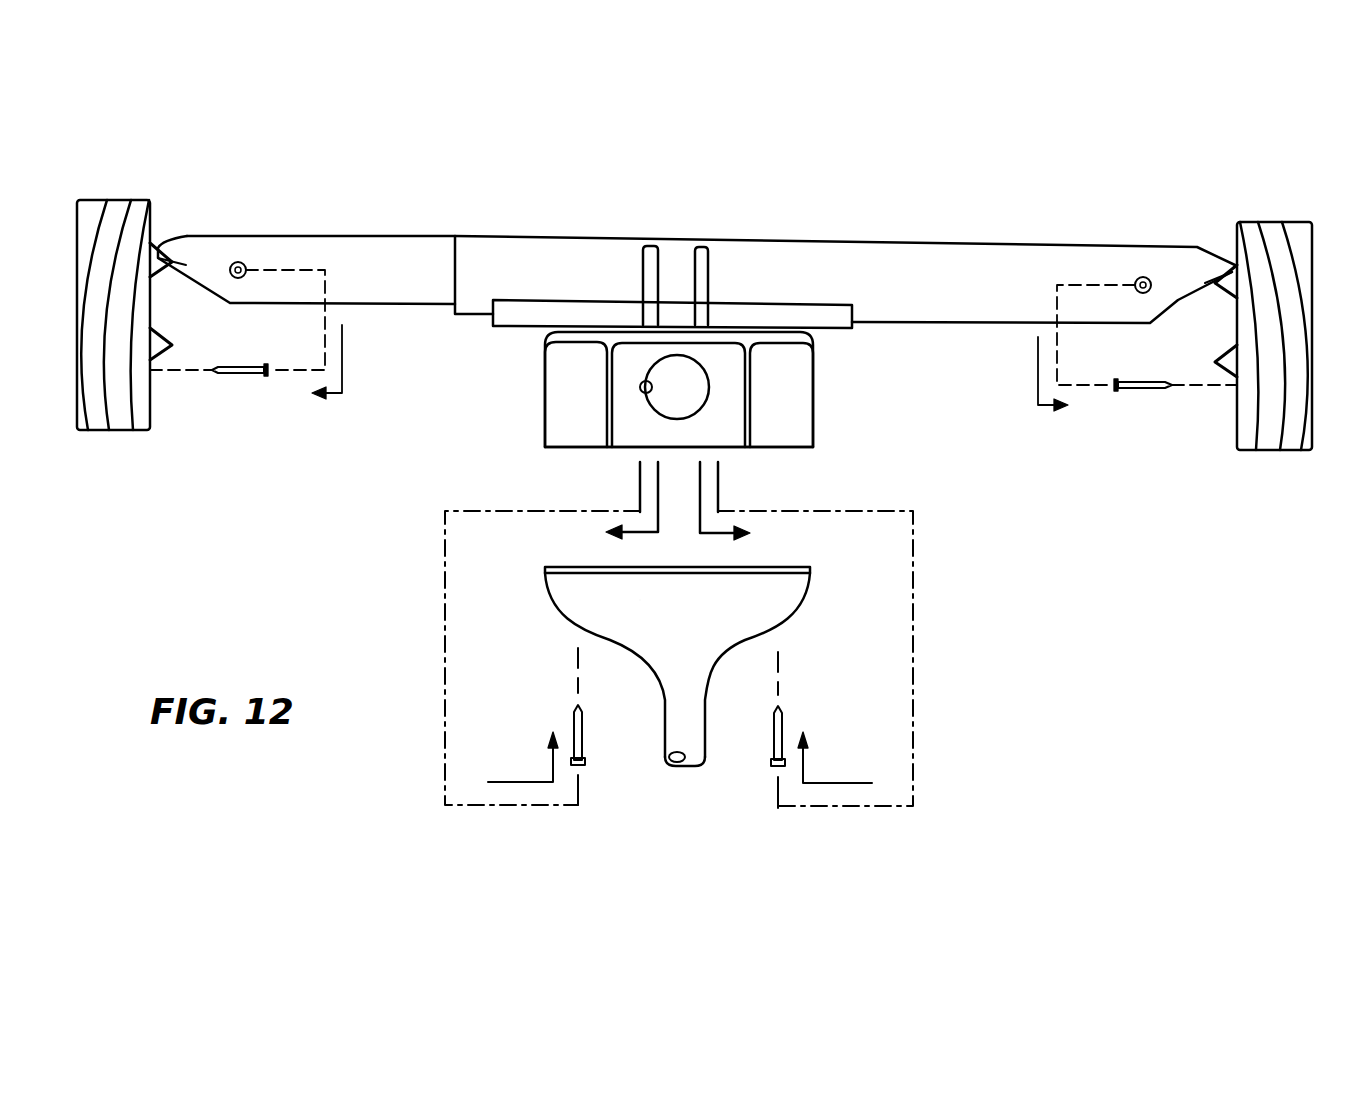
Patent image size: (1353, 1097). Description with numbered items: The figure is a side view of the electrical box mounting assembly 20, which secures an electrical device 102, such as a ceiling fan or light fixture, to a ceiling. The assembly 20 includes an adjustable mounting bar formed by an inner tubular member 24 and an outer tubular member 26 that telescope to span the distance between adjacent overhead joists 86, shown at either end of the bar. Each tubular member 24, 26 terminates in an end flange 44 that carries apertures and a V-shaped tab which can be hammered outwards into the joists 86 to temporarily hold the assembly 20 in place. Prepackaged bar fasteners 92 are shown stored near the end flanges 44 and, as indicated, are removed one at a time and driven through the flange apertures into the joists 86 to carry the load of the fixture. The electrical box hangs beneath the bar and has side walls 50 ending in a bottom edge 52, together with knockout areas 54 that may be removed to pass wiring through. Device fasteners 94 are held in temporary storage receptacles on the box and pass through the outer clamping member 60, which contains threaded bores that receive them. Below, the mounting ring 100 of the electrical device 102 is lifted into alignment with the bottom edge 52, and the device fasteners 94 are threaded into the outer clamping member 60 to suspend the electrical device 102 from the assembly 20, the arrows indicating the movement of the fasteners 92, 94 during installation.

The electrical box mounting assembly 20 is at (684, 118).
The inner tubular member 24 is at (406, 284).
The outer tubular member 26 is at (956, 289).
The end flange 44 is at (172, 268).
The side wall 50 is at (796, 404).
The bottom edge 52 is at (790, 448).
The knockout area 54 is at (693, 399).
The outer clamping member 60 is at (832, 318).
The joist 86 is at (104, 203).
The bar fastener 92 is at (240, 266).
The device fastener 94 is at (656, 236).
The mounting ring 100 is at (788, 576).
The electrical device 102 is at (708, 644).